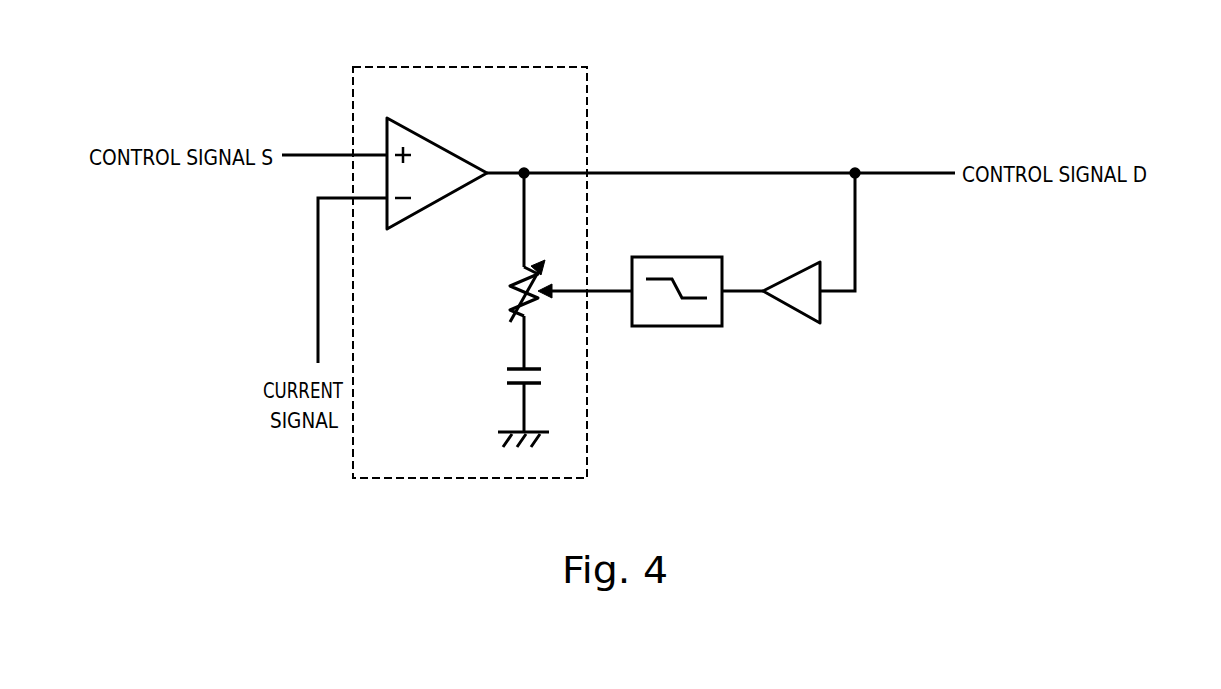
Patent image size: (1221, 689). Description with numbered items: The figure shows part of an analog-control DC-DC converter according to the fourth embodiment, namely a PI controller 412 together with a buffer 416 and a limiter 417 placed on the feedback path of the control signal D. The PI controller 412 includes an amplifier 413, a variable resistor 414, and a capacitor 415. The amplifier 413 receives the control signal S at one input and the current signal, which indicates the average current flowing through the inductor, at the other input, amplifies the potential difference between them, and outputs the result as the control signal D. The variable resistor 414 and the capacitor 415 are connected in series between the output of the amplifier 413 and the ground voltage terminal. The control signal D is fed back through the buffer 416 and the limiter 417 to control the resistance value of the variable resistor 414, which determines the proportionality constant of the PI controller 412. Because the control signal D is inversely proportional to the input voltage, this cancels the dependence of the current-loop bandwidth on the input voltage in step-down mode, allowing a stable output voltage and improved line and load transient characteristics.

The PI controller 412 is at (466, 66).
The amplifier 413 is at (430, 138).
The variable resistor 414 is at (510, 281).
The capacitor 415 is at (507, 375).
The buffer 416 is at (791, 277).
The limiter 417 is at (668, 257).